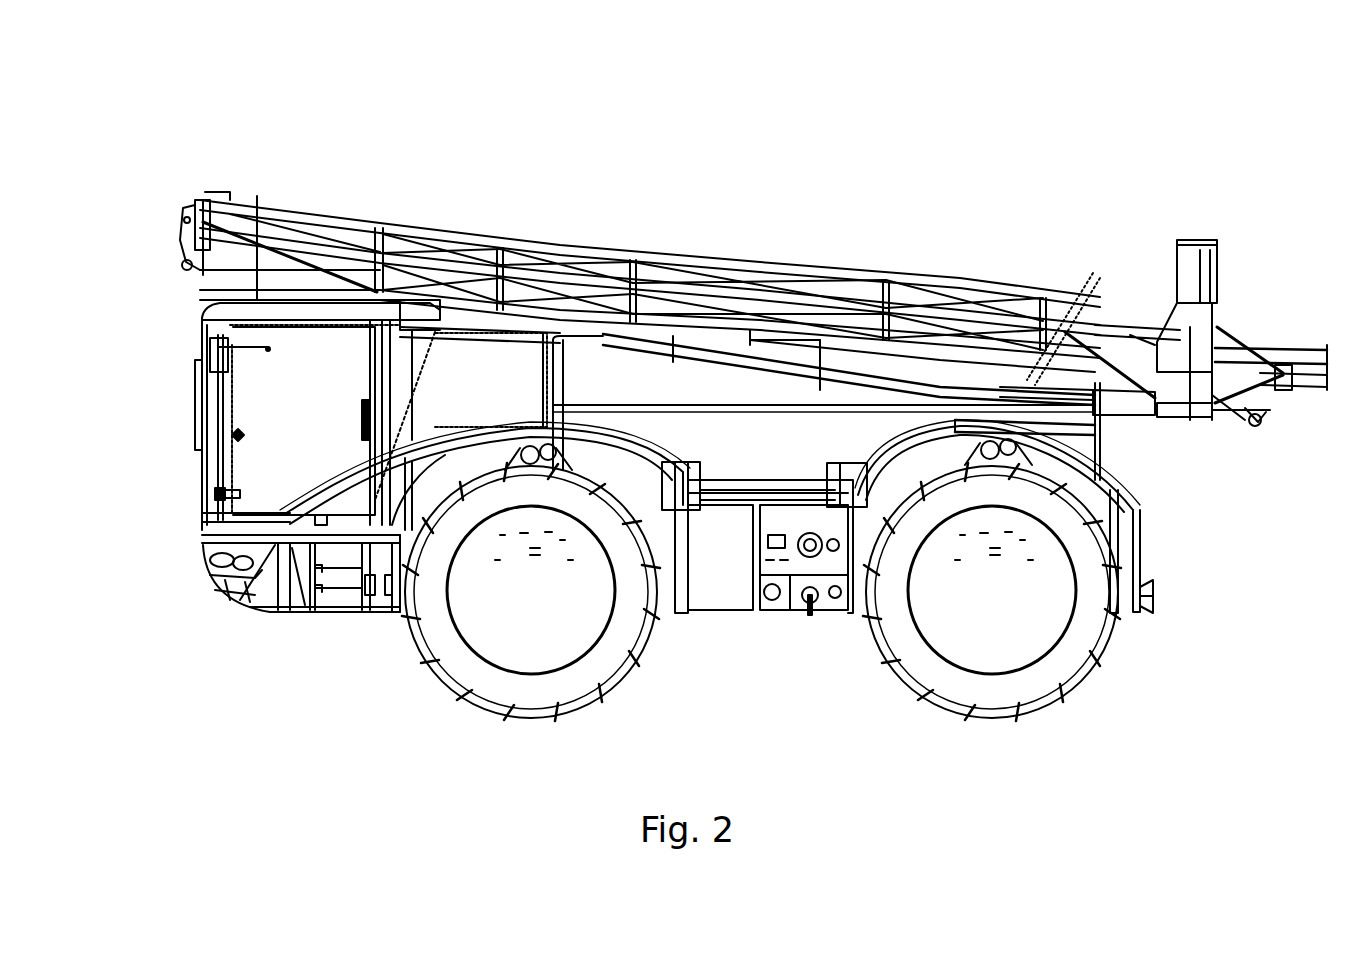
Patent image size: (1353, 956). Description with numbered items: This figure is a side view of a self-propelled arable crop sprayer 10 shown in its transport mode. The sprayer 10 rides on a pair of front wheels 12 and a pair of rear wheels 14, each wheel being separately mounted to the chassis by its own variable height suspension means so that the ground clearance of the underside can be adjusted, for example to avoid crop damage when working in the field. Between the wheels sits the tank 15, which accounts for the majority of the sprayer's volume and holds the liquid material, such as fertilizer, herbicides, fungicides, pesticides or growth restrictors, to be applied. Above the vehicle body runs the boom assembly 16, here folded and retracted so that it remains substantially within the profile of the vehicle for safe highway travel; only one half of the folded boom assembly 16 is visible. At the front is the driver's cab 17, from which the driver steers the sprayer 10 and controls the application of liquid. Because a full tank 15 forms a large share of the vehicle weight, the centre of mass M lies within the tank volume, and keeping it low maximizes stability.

The self-propelled arable crop sprayer 10 is at (176, 158).
The front wheels 12 is at (447, 683).
The rear wheels 14 is at (921, 695).
The tank 15 is at (806, 446).
The boom assembly 16 is at (807, 270).
The driver's cab 17 is at (205, 465).
The centre of mass M is at (745, 475).